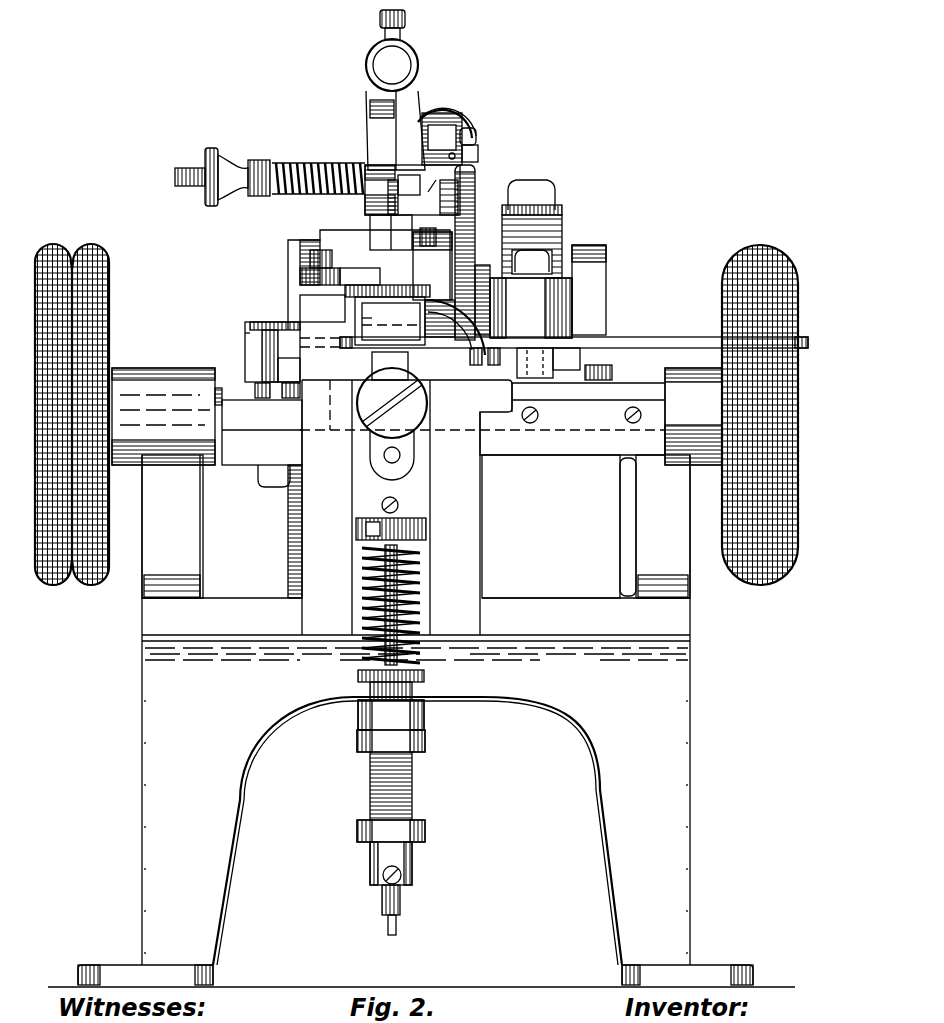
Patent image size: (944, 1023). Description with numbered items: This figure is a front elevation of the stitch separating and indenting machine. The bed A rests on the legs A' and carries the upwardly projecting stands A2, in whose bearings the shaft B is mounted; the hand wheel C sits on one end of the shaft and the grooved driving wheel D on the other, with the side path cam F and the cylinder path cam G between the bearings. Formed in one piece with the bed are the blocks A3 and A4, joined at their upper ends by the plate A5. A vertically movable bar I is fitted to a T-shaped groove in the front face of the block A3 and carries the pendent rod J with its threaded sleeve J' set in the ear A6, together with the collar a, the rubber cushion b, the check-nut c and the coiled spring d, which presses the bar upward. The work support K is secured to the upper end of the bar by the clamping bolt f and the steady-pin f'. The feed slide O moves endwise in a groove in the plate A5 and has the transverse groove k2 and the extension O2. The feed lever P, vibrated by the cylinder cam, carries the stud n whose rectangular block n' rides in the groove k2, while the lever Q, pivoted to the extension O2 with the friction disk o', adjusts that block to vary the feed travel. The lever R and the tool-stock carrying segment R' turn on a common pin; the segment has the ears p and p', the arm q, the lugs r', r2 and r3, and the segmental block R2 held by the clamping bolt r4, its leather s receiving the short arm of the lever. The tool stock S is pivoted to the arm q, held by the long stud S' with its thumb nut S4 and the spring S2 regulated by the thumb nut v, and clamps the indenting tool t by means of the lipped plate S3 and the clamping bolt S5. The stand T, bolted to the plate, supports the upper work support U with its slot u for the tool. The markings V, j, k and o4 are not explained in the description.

The bed A is at (415, 720).
The legs A' is at (415, 842).
The stands A2 is at (416, 526).
The block A3 is at (482, 507).
The block A4 is at (551, 526).
The plate A5 is at (443, 435).
The ear A6 is at (391, 700).
The shaft B is at (231, 390).
The hand wheel C is at (731, 415).
The grooved driving wheel D is at (79, 414).
The side path cam F is at (357, 280).
The cylinder path cam G is at (589, 290).
The vertically movable bar I is at (391, 511).
The pendent rod J is at (375, 741).
The threaded sleeve J' is at (401, 786).
The work support K is at (420, 338).
The feed slide O is at (272, 352).
The extension O2 is at (286, 370).
The feed lever P is at (523, 259).
The lever Q is at (554, 333).
The lever R is at (471, 252).
The tool-stock carrying segment R' is at (412, 190).
The segmental block R2 is at (442, 139).
The tool stock S is at (382, 173).
The stud S' is at (431, 194).
The spring S2 is at (326, 156).
The lipped plate S3 is at (391, 232).
The thumb nut S4 is at (222, 184).
The clamping bolt S5 is at (433, 242).
The stand T is at (294, 361).
The upper work support U is at (325, 277).
The bar V is at (386, 290).
The collar a is at (404, 875).
The rubber cushion b is at (391, 852).
The check-nut c is at (391, 741).
The coiled spring d is at (420, 603).
The clamping bolt f is at (392, 403).
The steady-pin f' is at (387, 464).
The pin j is at (389, 335).
The pin k is at (366, 320).
The transverse groove k2 is at (553, 366).
The stud n is at (532, 262).
The rectangular block n' is at (511, 363).
The disk o' is at (238, 328).
The pin o4 is at (444, 160).
The ear p is at (327, 259).
The ear p' is at (432, 266).
The arm q is at (395, 90).
The lugs r' is at (380, 190).
The lug r2 is at (449, 197).
The lug r3 is at (476, 136).
The clamping bolt r4 is at (479, 150).
The leather piece s is at (440, 120).
The indenting tool t is at (398, 197).
The slot u is at (360, 277).
The thumb nut v is at (448, 116).